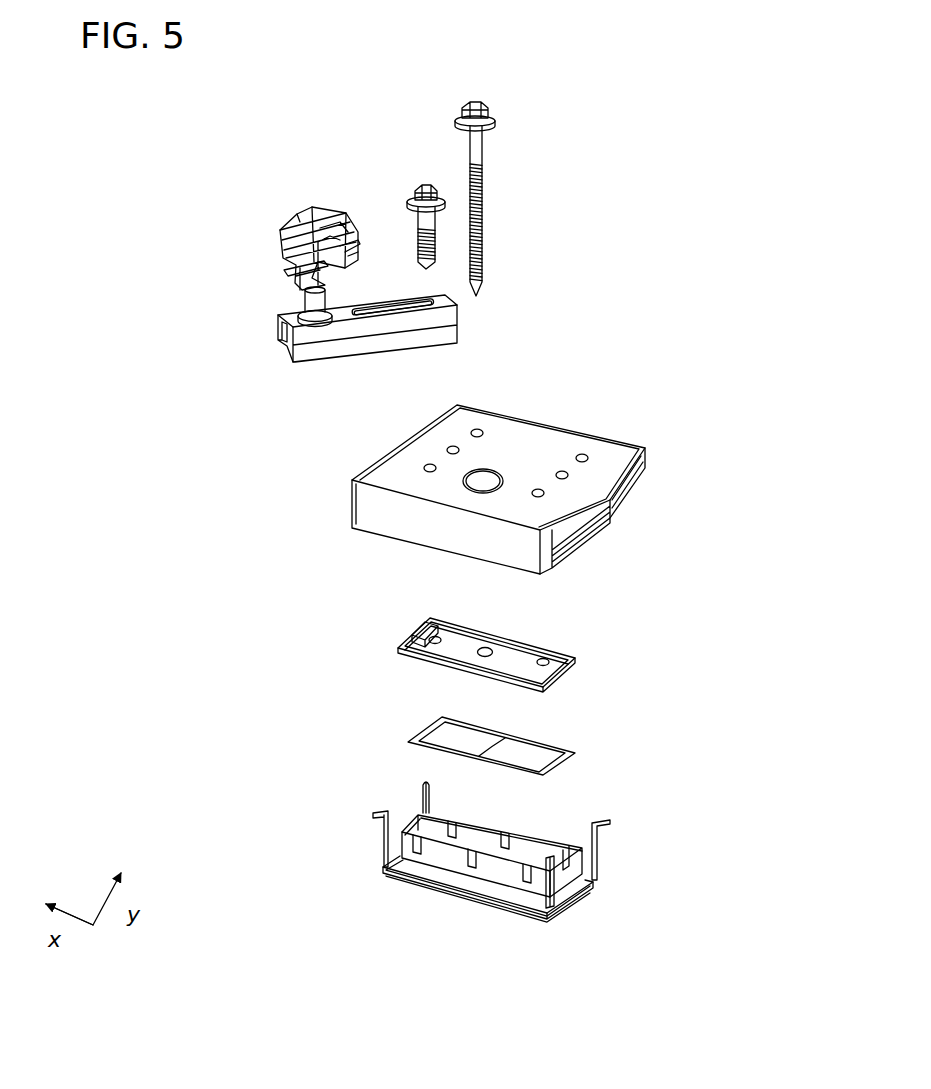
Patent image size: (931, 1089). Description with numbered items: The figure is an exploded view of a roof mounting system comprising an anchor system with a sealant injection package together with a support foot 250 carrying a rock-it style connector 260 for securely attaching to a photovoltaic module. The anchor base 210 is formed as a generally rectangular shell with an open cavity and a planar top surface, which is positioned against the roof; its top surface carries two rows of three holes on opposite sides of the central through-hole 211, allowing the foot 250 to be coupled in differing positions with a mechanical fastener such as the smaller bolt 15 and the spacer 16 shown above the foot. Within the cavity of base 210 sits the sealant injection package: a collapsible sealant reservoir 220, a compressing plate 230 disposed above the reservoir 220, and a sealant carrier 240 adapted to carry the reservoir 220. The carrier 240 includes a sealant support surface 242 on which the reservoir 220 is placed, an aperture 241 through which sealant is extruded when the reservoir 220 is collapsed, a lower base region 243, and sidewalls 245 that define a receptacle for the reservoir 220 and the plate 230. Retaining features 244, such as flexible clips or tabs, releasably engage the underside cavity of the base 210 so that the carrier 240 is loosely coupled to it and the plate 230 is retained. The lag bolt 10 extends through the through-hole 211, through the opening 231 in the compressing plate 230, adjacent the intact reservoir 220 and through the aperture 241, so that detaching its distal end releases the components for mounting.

The lag bolt 10 is at (485, 174).
The bolt 15 is at (425, 188).
The spacer 16 is at (305, 298).
The anchor base 210 is at (533, 479).
The through-hole 211 is at (487, 481).
The collapsible sealant reservoir 220 is at (527, 748).
The compressing plate 230 is at (505, 643).
The opening 231 is at (486, 650).
The sealant carrier 240 is at (490, 856).
The aperture 241 is at (466, 904).
The sealant support surface 242 is at (470, 842).
The base flange 243 is at (524, 926).
The retaining feature 244 is at (375, 813).
The sidewall 245 is at (533, 833).
The support foot 250 is at (313, 352).
The rock-it style connector 260 is at (278, 231).